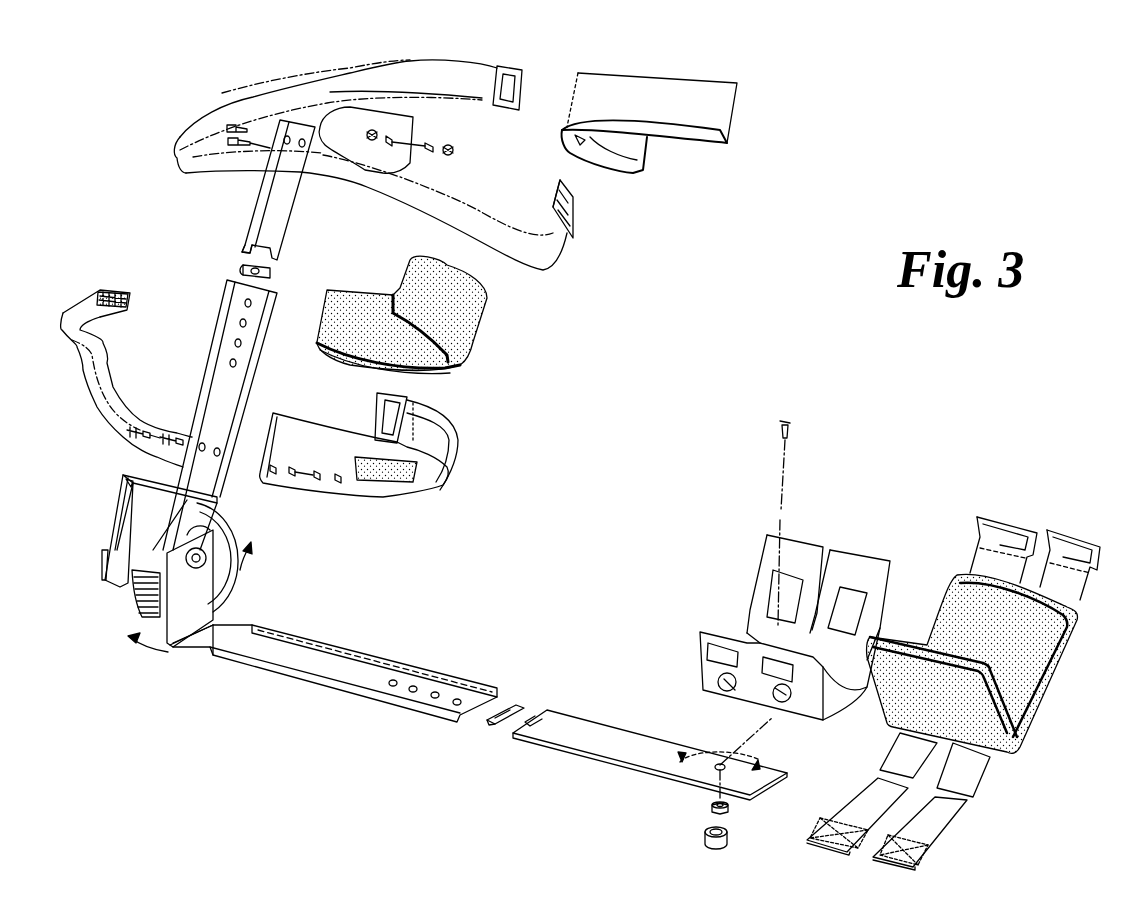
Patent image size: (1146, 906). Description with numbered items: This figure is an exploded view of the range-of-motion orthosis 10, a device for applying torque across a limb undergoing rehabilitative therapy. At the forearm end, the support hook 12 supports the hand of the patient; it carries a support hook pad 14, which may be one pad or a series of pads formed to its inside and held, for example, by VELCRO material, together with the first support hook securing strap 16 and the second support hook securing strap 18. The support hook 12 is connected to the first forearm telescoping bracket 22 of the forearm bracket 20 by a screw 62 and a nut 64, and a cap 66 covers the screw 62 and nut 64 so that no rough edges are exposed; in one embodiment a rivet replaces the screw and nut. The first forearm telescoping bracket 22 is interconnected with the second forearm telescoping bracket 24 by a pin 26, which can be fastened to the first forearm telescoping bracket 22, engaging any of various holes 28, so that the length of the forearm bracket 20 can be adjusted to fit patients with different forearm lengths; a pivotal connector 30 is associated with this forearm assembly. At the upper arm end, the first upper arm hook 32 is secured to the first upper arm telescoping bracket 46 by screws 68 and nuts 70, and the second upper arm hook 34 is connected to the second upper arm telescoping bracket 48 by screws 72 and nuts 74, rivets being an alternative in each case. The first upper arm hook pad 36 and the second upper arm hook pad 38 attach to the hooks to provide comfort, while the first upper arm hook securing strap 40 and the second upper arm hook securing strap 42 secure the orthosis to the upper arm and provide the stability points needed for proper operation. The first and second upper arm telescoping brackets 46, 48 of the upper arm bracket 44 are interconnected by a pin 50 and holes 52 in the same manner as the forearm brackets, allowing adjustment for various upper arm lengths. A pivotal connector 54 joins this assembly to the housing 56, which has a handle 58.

The range-of-motion orthosis 10 is at (903, 393).
The support hook 12 is at (760, 570).
The support hook pad 14 is at (1080, 630).
The first support hook securing strap 16 is at (952, 830).
The second support hook securing strap 18 is at (864, 780).
The forearm bracket 20 is at (375, 712).
The first forearm telescoping bracket 22 is at (593, 720).
The second forearm telescoping bracket 24 is at (268, 673).
The pin 26 is at (512, 702).
The holes 28 is at (413, 686).
The pivotal connector 30 is at (694, 800).
The first upper arm hook 32 is at (400, 62).
The second upper arm hook 34 is at (450, 418).
The first upper arm hook pad 36 is at (700, 78).
The second upper arm hook pad 38 is at (483, 333).
The first upper arm hook securing strap 40 is at (574, 236).
The second upper arm hook securing strap 42 is at (103, 427).
The upper arm bracket 44 is at (250, 246).
The first upper arm telescoping bracket 46 is at (258, 212).
The second upper arm telescoping bracket 48 is at (228, 333).
The pin 50 is at (271, 271).
The holes 52 is at (241, 345).
The pivotal connector 54 is at (200, 557).
The housing 56 is at (112, 598).
The handle 58 is at (112, 545).
The screw 62 is at (792, 430).
The nut 64 is at (727, 808).
The cap 66 is at (715, 848).
The screws 68 is at (240, 133).
The nuts 70 is at (443, 130).
The screws 72 is at (134, 427).
The nuts 74 is at (317, 481).